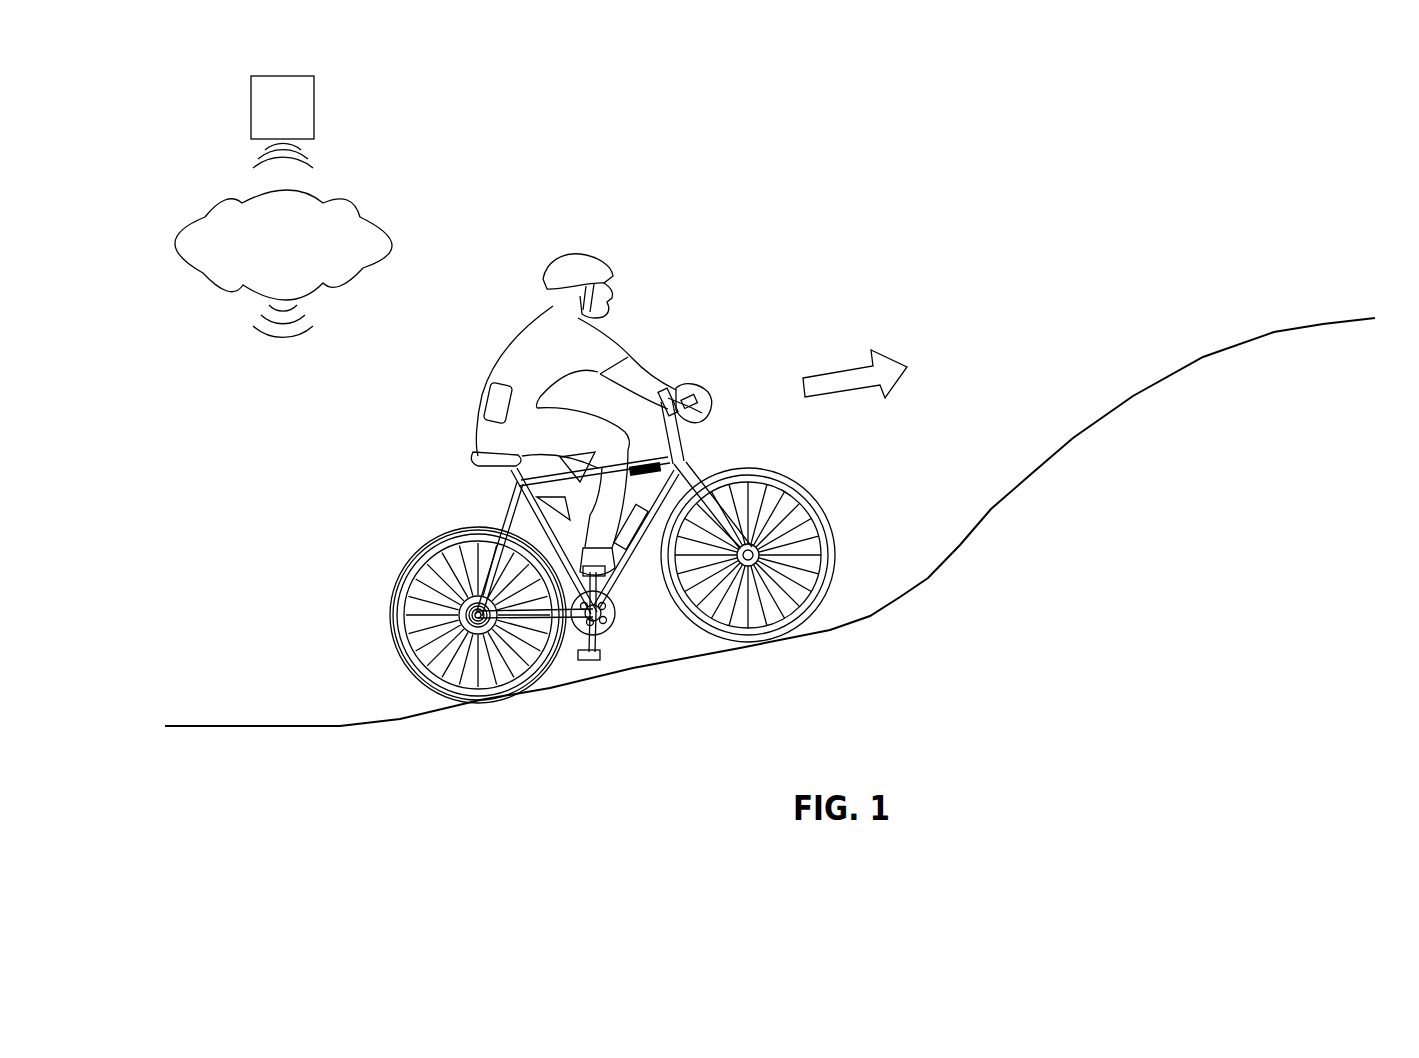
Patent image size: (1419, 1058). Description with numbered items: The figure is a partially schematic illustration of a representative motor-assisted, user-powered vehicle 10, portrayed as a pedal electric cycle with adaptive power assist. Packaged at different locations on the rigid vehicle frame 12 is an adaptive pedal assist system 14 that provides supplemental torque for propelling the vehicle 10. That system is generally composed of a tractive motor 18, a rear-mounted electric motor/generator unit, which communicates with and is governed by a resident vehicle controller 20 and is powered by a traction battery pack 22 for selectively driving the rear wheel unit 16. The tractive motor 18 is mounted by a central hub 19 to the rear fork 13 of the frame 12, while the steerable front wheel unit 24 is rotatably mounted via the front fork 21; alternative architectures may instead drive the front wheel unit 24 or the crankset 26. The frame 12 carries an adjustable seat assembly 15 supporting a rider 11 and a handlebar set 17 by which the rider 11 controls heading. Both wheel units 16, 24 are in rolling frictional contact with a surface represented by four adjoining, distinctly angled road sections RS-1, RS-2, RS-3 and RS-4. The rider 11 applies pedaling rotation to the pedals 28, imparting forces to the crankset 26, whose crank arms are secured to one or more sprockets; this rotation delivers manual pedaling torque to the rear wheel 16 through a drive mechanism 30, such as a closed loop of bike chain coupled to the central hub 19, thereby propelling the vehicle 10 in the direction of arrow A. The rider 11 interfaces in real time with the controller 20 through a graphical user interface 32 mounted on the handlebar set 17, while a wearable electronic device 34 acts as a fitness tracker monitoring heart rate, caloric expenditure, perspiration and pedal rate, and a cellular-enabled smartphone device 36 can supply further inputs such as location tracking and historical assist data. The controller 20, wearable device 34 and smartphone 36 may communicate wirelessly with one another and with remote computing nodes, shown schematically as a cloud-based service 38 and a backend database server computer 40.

The motor-assisted, user-powered vehicle 10 is at (820, 287).
The rider 11 is at (513, 340).
The vehicle frame 12 is at (663, 503).
The rear fork 13 is at (517, 513).
The adaptive pedal assist system 14 is at (425, 602).
The adjustable seat assembly 15 is at (477, 460).
The rear wheel unit 16 is at (400, 671).
The handlebar set 17 is at (670, 400).
The tractive motor 18 is at (477, 620).
The central hub 19 is at (450, 535).
The resident vehicle controller 20 is at (693, 440).
The front fork 21 is at (738, 550).
The traction battery pack 22 is at (640, 537).
The front wheel unit 24 is at (851, 550).
The crankset 26 is at (607, 620).
The pedals 28 is at (600, 653).
The drive mechanism 30 is at (479, 622).
The graphical user interface 32 is at (644, 412).
The wearable electronic device 34 is at (687, 390).
The smartphone device 36 is at (480, 398).
The cloud-based service 38 is at (265, 258).
The backend database server computer 40 is at (265, 122).
The arrow A is at (843, 368).
The road section RS-1 is at (259, 725).
The road section RS-2 is at (612, 668).
The road section RS-3 is at (1074, 438).
The road section RS-4 is at (1323, 318).